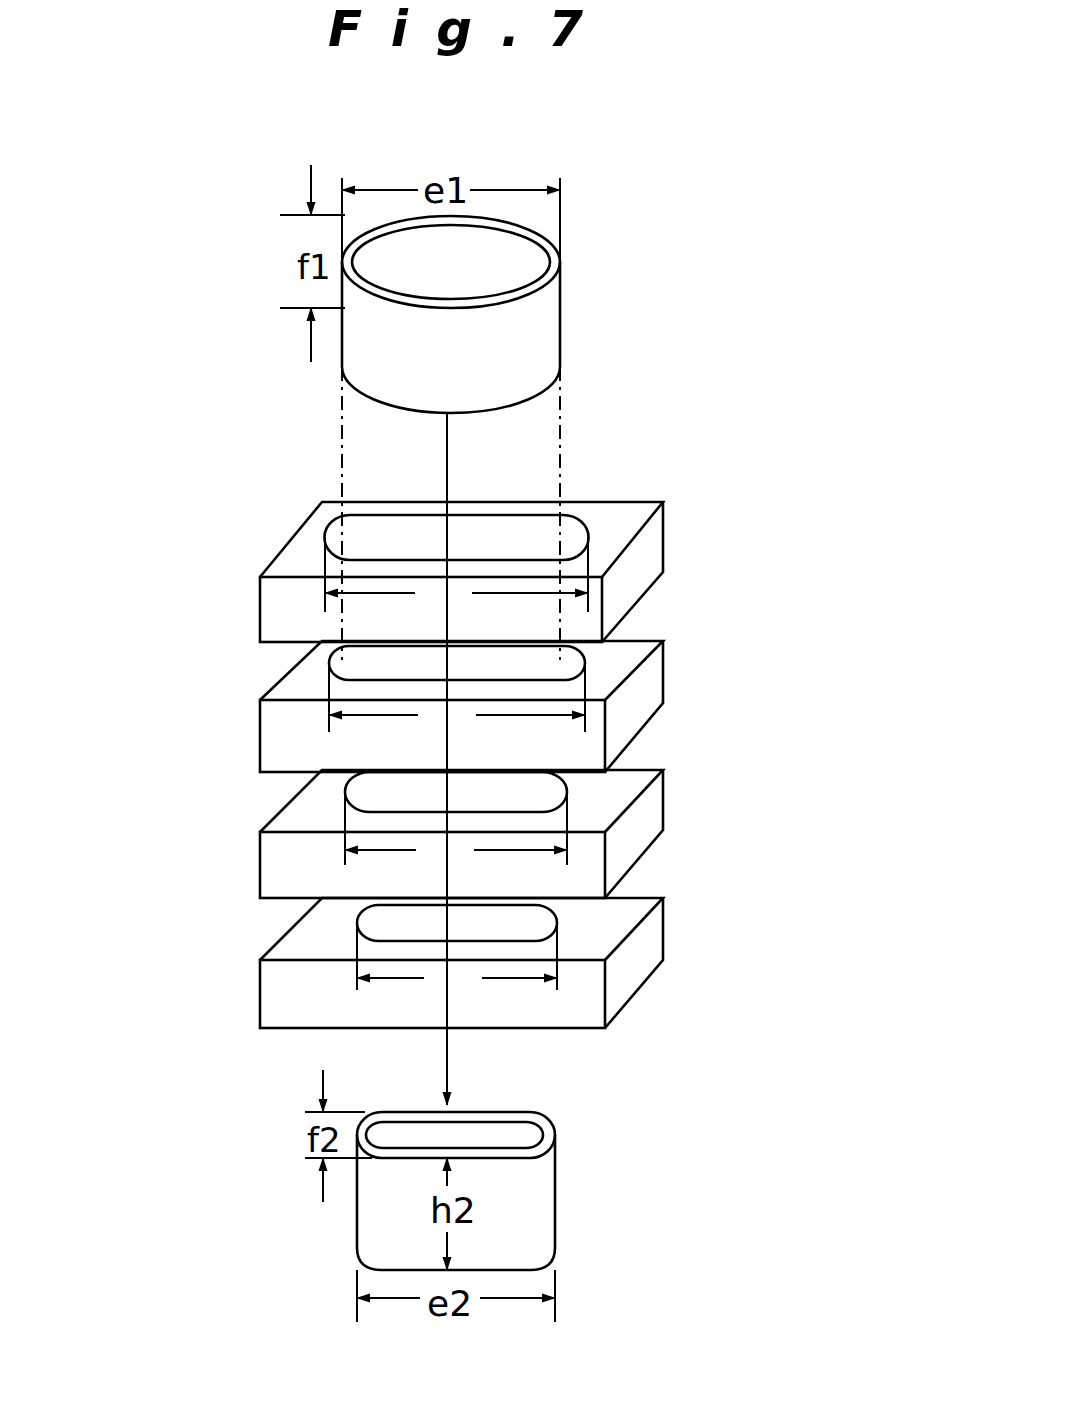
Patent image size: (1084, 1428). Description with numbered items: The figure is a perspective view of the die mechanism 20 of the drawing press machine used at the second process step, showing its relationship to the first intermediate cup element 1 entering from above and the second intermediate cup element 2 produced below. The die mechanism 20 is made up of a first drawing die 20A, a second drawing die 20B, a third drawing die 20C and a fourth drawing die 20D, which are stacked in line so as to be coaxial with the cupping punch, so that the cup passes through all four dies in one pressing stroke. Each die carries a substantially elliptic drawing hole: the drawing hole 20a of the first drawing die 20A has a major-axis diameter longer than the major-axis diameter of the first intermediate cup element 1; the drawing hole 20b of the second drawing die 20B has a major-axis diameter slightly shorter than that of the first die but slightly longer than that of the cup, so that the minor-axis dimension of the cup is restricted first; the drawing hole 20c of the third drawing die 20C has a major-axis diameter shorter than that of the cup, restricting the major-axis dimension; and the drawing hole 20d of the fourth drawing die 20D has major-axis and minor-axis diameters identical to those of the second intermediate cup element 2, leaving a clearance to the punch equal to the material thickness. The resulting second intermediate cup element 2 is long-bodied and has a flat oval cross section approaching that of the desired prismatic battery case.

The first intermediate cup element 1 is at (566, 341).
The second intermediate cup element 2 is at (488, 1106).
The die mechanism 20 is at (782, 610).
The first drawing die 20A is at (517, 546).
The second drawing die 20B is at (479, 680).
The third drawing die 20C is at (481, 833).
The fourth drawing die 20D is at (488, 943).
The drawing hole 20a is at (510, 518).
The drawing hole 20b is at (344, 660).
The drawing hole 20c is at (362, 792).
The drawing hole 20d is at (372, 924).